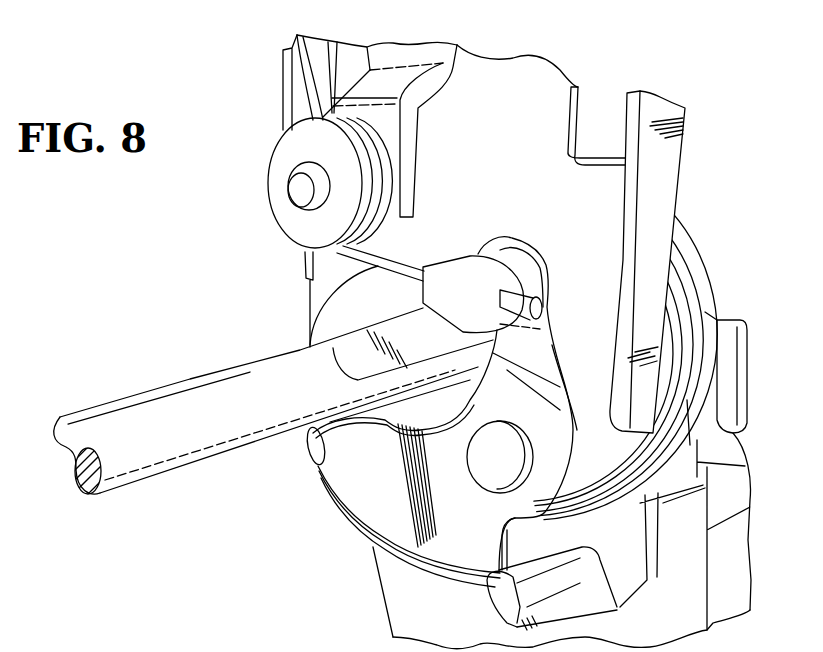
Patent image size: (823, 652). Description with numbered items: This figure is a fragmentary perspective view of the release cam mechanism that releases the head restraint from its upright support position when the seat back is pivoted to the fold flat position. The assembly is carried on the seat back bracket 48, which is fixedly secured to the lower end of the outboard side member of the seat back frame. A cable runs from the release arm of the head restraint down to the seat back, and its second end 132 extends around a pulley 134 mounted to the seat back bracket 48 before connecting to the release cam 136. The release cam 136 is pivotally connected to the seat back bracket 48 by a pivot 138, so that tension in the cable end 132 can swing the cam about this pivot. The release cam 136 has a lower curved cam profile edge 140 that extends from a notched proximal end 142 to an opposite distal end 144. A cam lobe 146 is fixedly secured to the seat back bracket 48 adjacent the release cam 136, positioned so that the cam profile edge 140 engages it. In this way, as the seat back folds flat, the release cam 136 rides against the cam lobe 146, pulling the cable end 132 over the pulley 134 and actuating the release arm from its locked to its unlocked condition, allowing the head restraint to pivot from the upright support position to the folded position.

The seat back bracket 48 is at (663, 177).
The second end of the cable 132 is at (312, 310).
The pulley 134 is at (268, 165).
The release cam 136 is at (357, 487).
The pivot 138 is at (493, 462).
The lower curved cam profile edge 140 is at (404, 565).
The notched proximal end 142 is at (504, 522).
The distal end 144 is at (312, 457).
The cam lobe 146 is at (500, 597).